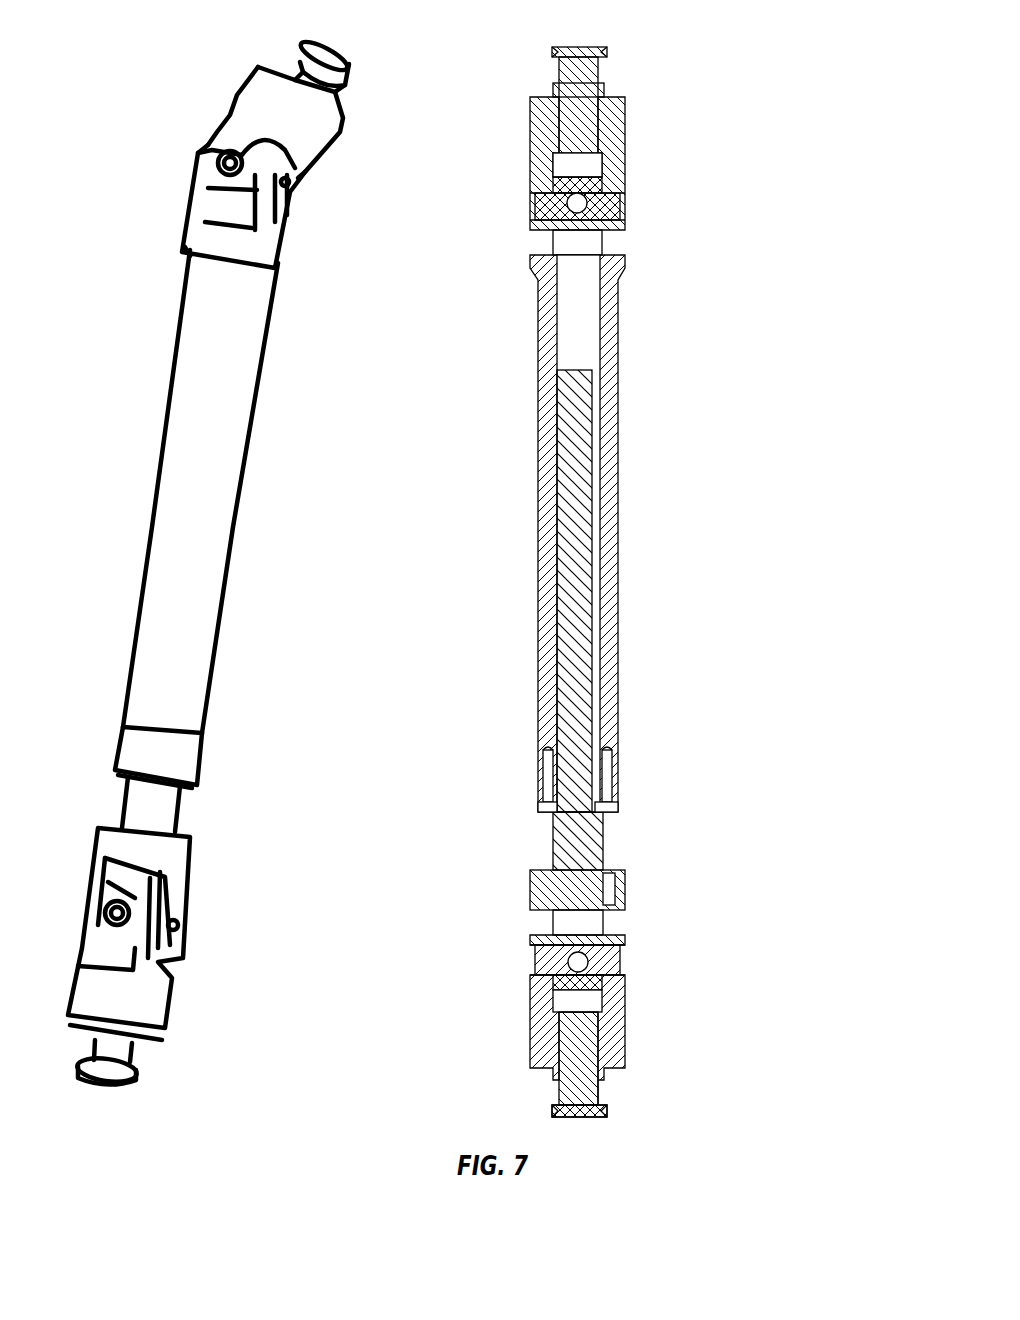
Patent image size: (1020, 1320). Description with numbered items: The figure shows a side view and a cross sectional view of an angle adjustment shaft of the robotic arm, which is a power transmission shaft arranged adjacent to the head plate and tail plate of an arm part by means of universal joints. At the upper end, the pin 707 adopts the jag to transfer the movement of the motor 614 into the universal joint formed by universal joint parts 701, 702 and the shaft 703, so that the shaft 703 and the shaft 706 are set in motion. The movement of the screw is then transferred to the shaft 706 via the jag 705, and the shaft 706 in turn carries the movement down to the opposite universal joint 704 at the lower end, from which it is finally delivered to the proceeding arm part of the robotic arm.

The pin 707 is at (605, 50).
The universal joint 702 is at (622, 148).
The universal joint 701 is at (603, 178).
The motor 614 is at (583, 203).
The shaft 703 is at (620, 300).
The shaft 706 is at (592, 490).
The jag 705 is at (615, 800).
The universal joint 704 is at (617, 893).